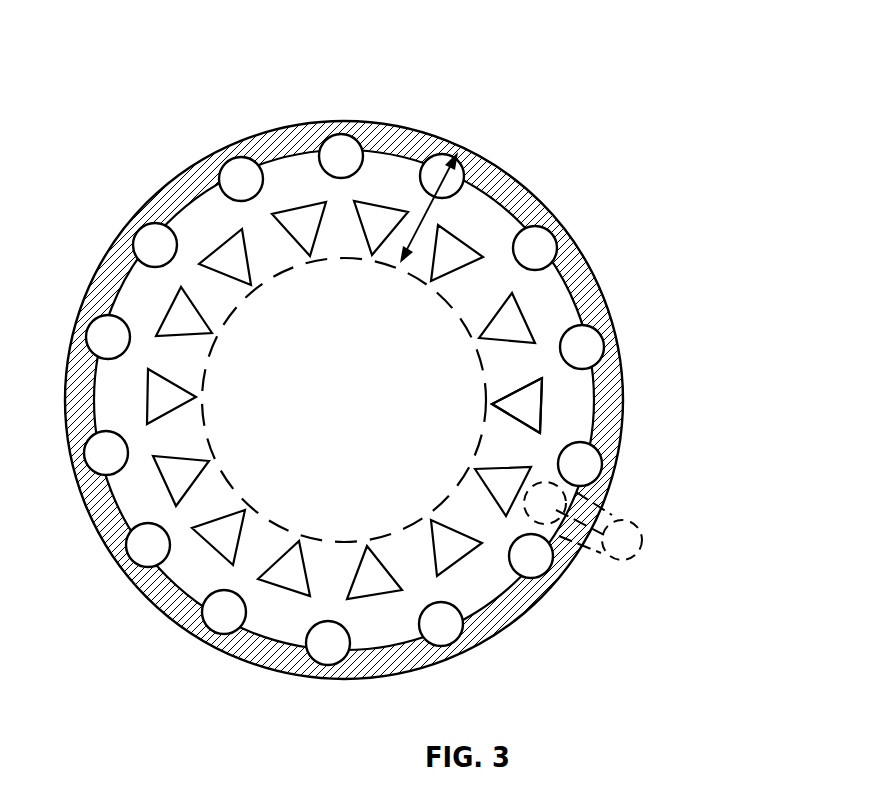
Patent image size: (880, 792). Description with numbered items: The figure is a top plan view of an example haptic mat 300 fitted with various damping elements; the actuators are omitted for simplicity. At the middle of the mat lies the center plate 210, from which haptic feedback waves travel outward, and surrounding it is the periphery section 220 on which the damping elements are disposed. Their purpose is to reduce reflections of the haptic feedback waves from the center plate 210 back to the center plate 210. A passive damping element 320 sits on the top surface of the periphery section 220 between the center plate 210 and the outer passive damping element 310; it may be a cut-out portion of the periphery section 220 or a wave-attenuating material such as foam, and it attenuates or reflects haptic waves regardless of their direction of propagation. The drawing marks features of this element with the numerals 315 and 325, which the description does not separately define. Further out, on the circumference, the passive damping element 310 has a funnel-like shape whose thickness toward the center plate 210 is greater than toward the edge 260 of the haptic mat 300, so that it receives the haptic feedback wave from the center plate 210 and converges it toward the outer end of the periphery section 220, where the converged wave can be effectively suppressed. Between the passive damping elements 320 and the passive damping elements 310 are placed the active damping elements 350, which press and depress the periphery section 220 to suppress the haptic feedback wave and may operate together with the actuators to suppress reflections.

The haptic mat 300 is at (426, 359).
The edge 260 is at (597, 279).
The active damping elements 350 is at (242, 155).
The center plate 210 is at (358, 404).
The periphery section 220 is at (423, 214).
The passive damping element 320 is at (525, 402).
The wedge base 315 is at (541, 415).
The wedge apex 325 is at (494, 401).
The passive damping element 310 is at (673, 563).